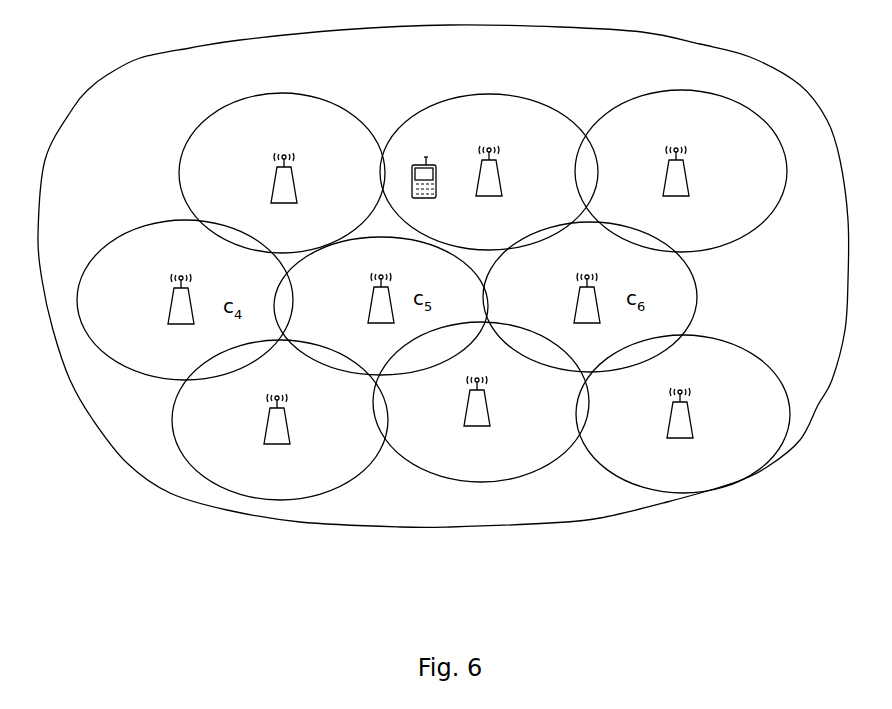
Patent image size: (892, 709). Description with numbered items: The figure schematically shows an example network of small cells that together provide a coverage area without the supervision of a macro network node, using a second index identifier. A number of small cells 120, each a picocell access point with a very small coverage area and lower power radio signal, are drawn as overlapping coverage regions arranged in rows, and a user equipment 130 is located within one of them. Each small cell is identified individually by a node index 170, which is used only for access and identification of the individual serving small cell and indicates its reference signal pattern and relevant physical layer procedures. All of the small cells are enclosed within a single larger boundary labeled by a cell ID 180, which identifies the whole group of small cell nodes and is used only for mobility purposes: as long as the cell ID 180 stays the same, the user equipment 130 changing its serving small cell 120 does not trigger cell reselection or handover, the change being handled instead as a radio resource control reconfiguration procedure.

The cell ID 180 is at (98, 147).
The small cell 120 is at (232, 138).
The user equipment 130 is at (412, 157).
The node index 170 is at (340, 433).